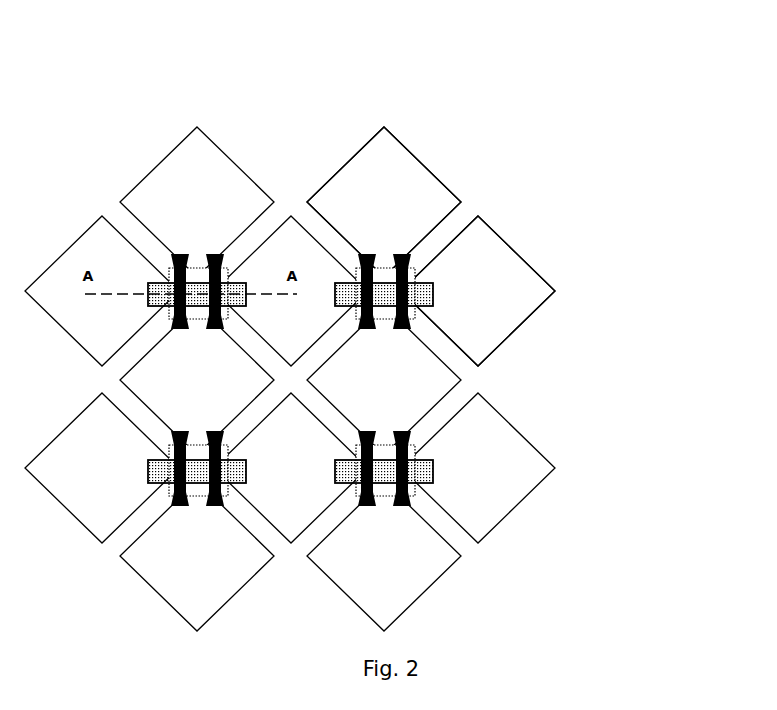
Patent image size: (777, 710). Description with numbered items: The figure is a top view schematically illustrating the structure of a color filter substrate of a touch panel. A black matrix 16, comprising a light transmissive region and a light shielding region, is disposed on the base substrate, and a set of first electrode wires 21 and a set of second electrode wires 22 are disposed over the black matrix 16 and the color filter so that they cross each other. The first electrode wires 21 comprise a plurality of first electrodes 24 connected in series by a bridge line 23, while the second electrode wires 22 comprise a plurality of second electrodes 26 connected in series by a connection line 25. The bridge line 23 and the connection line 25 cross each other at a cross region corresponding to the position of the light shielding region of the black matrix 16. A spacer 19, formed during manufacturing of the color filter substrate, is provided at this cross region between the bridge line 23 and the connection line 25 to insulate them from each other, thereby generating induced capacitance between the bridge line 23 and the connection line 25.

The black matrix 16 is at (357, 257).
The spacer 19 is at (413, 270).
The first electrode wires 21 is at (555, 292).
The second electrode wires 22 is at (385, 127).
The bridge line 23 is at (418, 293).
The first electrodes 24 is at (523, 280).
The connection line 25 is at (387, 277).
The second electrodes 26 is at (363, 182).